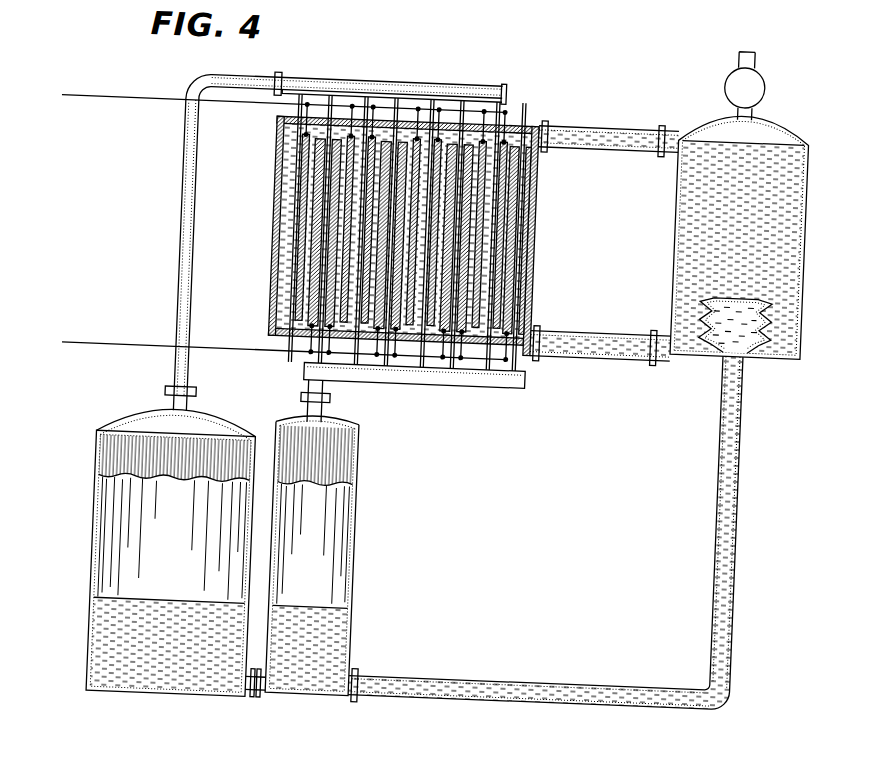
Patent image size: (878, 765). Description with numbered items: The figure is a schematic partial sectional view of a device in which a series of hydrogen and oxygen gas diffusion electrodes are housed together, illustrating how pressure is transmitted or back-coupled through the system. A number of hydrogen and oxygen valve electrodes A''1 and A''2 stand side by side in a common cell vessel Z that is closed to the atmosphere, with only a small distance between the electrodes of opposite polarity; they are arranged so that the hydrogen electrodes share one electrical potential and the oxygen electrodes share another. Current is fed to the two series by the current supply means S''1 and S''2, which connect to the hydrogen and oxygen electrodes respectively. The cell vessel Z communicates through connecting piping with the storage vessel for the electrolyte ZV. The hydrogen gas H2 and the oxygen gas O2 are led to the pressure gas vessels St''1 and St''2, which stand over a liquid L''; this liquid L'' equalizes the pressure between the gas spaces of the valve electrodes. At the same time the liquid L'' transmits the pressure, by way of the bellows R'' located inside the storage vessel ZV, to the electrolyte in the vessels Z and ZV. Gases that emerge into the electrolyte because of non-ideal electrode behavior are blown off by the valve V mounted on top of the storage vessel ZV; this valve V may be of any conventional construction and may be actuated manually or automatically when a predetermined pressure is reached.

The common cell vessel Z is at (388, 233).
The hydrogen valve electrodes A''1 is at (403, 183).
The oxygen valve electrodes A''2 is at (417, 282).
The current supply means S''1 is at (284, 90).
The current supply means S''2 is at (284, 340).
The storage vessel for the electrolyte ZV is at (689, 208).
The bellows R'' is at (762, 326).
The liquid L'' is at (451, 408).
The pressure gas vessel St''1 is at (142, 550).
The pressure gas vessel St''2 is at (339, 555).
The valve V is at (744, 86).
The hydrogen gas H2 is at (172, 515).
The oxygen gas O2 is at (311, 520).